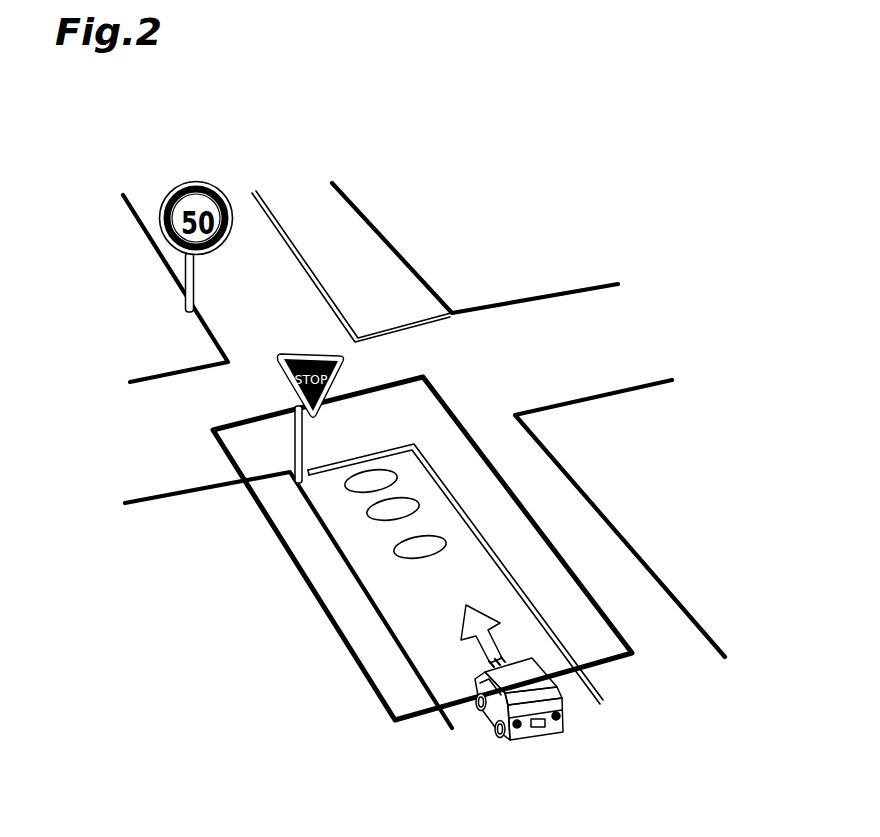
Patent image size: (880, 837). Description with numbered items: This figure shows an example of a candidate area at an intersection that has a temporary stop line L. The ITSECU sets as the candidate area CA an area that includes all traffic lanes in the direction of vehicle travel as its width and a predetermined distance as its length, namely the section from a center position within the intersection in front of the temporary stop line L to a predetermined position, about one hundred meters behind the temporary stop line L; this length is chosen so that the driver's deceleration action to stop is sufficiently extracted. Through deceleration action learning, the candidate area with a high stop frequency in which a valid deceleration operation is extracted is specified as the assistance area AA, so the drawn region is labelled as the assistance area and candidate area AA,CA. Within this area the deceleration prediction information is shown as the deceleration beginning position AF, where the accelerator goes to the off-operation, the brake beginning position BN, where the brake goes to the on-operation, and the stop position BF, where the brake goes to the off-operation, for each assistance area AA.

The temporary stop line L is at (334, 468).
The stop position BF is at (358, 491).
The brake beginning position BN is at (383, 522).
The deceleration beginning position AF is at (409, 556).
The assistance area AA is at (422, 585).
The candidate area CA is at (415, 722).
The assistance area and candidate area AA,CA is at (422, 585).